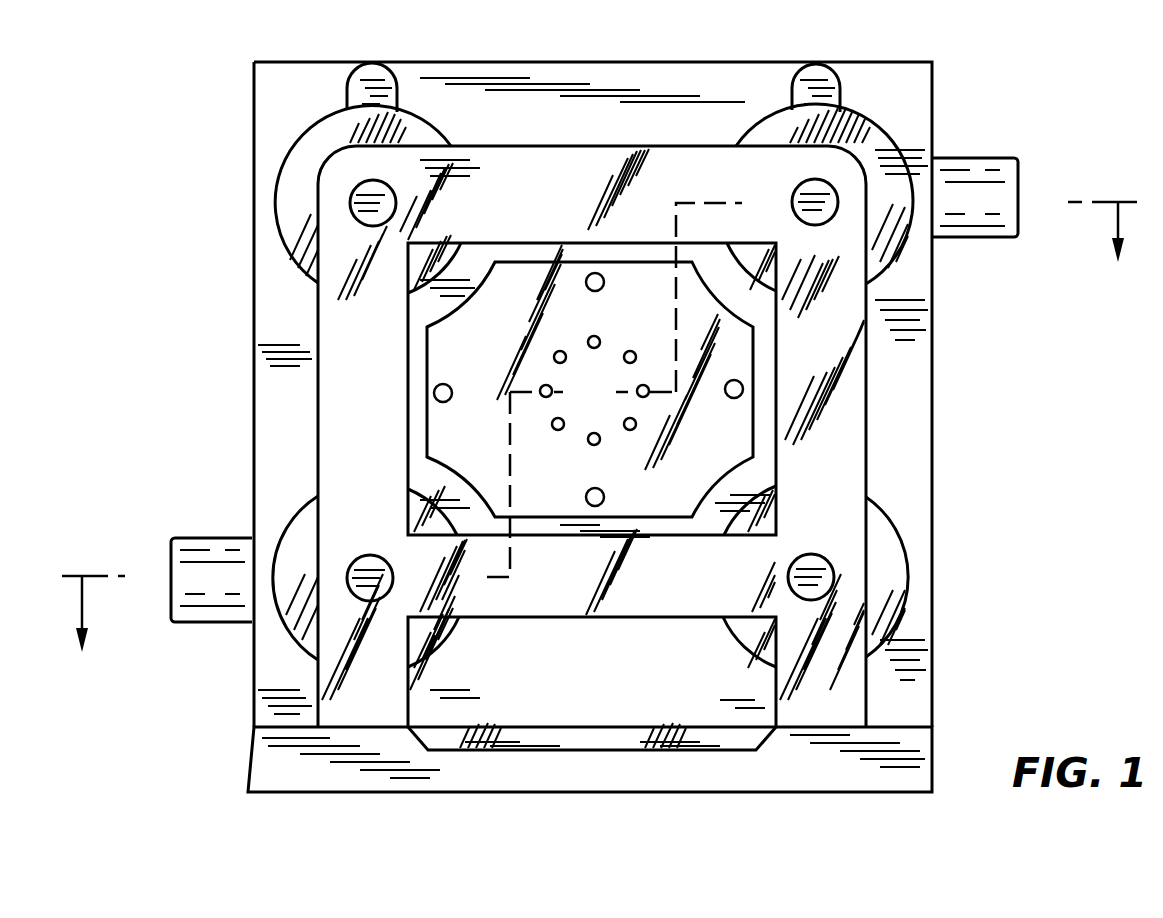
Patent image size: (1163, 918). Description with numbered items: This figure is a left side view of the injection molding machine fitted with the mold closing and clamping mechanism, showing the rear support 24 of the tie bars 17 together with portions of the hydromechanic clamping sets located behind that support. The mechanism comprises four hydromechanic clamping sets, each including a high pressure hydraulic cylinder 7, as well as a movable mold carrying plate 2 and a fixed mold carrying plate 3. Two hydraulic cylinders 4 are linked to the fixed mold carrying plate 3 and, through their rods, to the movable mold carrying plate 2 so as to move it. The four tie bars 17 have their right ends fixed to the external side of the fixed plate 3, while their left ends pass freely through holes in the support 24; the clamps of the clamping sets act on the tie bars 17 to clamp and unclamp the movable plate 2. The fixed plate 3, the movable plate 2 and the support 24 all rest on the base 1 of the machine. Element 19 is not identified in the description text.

The base 1 is at (917, 752).
The movable mold carrying plate 2 is at (525, 72).
The fixed mold carrying plate 3 is at (599, 446).
The hydraulic cylinders 4 is at (1012, 192).
The high pressure hydraulic cylinder 7 is at (302, 153).
The tie bars 17 is at (350, 210).
The boss 19 is at (375, 68).
The support 24 is at (573, 162).